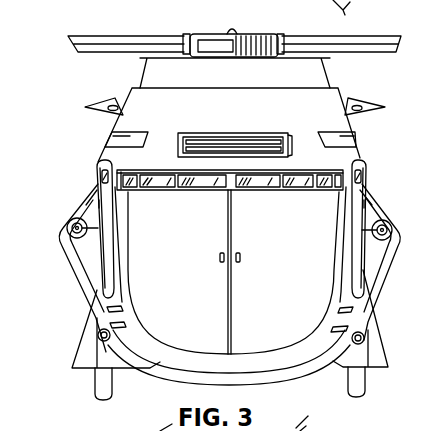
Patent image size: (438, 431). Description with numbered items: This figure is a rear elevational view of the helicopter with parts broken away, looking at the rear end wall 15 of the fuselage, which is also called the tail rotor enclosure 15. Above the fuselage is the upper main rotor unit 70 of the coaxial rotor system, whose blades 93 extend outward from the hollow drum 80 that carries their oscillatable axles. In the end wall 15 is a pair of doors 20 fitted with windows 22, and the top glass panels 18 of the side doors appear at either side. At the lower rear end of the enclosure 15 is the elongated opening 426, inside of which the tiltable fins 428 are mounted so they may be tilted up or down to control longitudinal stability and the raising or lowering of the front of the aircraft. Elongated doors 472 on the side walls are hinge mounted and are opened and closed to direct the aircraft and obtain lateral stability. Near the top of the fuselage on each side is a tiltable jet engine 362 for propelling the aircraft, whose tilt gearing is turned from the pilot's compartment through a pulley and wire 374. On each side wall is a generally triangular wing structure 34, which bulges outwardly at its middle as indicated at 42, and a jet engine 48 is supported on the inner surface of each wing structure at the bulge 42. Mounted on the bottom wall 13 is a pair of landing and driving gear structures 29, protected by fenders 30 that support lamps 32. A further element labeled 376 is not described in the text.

The blade 93 is at (141, 37).
The hollow drum 80 is at (209, 42).
The upper main rotor unit 70 is at (258, 35).
The end wall 15 is at (268, 80).
The jet engine 362 is at (372, 104).
The elongated door 472 is at (138, 135).
The lower rear end opening 426 is at (222, 132).
The tiltable fin 428 is at (292, 148).
The top glass panel 18 is at (362, 180).
The bottom wall 13 is at (166, 374).
The door 20 is at (196, 258).
The window 22 is at (165, 190).
The bulge 42 is at (66, 236).
The wing structure 34 is at (75, 278).
The jet engine 48 is at (80, 214).
The lamp 32 is at (97, 333).
The fender 30 is at (78, 364).
The landing and driving gear structure 29 is at (85, 406).
The lower bracket 376 is at (174, 430).
The wire 374 is at (319, 415).